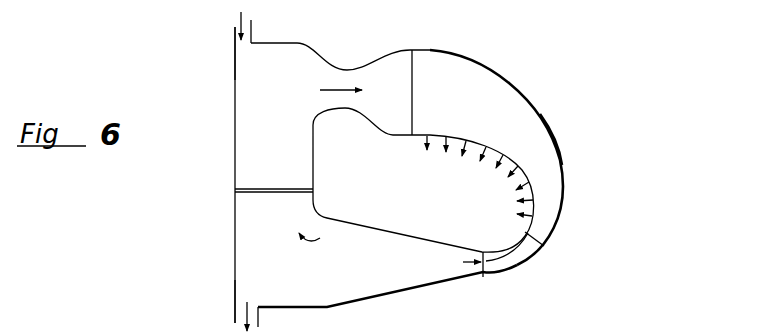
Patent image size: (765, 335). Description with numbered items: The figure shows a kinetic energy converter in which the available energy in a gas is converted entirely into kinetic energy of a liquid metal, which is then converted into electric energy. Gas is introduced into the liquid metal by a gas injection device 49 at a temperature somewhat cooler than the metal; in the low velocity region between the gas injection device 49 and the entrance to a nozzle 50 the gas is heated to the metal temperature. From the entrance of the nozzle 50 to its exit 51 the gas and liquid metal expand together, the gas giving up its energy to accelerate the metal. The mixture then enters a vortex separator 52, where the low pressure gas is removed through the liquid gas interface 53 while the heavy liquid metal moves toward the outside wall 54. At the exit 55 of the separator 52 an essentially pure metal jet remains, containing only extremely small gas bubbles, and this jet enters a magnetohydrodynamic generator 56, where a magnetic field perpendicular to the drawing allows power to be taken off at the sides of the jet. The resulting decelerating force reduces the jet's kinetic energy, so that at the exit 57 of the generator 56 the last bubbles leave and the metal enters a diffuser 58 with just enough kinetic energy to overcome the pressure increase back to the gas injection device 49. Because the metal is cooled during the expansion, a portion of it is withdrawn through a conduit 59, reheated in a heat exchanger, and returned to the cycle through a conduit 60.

The gas injection device 49 is at (235, 192).
The nozzle 50 is at (320, 56).
The exit of the nozzle 51 is at (412, 52).
The vortex separator 52 is at (499, 80).
The liquid gas interface 53 is at (519, 165).
The outside wall 54 is at (546, 126).
The exit of the separator 55 is at (544, 246).
The magnetohydrodynamic generator 56 is at (518, 262).
The exit of the generator 57 is at (482, 276).
The diffuser 58 is at (357, 293).
The conduit 59 is at (238, 314).
The conduit 60 is at (234, 28).